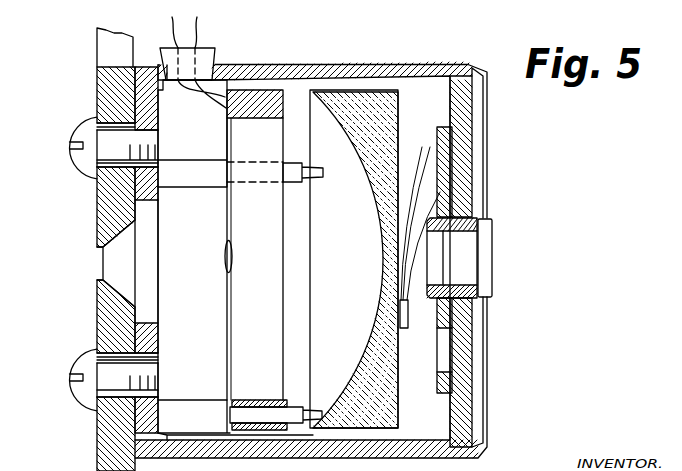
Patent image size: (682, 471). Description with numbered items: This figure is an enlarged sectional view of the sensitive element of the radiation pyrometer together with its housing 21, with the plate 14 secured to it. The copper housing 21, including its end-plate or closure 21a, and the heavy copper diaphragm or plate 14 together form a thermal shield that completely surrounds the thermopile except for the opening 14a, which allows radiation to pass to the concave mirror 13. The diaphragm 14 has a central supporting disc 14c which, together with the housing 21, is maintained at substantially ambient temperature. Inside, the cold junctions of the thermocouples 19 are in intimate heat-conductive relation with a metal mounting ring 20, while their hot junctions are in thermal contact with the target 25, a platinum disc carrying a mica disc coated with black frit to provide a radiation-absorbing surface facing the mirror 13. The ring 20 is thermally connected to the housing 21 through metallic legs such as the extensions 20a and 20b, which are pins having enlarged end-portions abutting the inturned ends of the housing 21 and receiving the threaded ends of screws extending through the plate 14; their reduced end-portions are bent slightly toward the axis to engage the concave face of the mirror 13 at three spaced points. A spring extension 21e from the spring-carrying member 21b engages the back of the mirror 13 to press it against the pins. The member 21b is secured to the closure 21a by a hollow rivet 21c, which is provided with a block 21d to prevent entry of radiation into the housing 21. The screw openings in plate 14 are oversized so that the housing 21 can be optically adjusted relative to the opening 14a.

The mirror 13 is at (377, 200).
The plate 14 is at (108, 55).
The opening 14a is at (100, 275).
The central supporting disc 14c is at (110, 307).
The thermocouples 19 is at (229, 218).
The mounting ring 20 is at (247, 97).
The extension 20a is at (185, 408).
The extension 20b is at (177, 158).
The housing 21 is at (362, 62).
The end-plate 21a is at (465, 115).
The spring-carrying member 21b is at (440, 127).
The hollow rivet 21c is at (478, 222).
The block 21d is at (472, 273).
The spring extension 21e is at (404, 330).
The target 25 is at (232, 268).